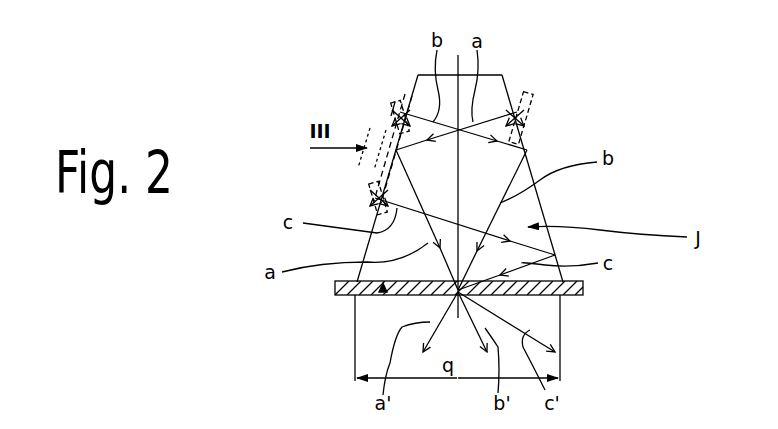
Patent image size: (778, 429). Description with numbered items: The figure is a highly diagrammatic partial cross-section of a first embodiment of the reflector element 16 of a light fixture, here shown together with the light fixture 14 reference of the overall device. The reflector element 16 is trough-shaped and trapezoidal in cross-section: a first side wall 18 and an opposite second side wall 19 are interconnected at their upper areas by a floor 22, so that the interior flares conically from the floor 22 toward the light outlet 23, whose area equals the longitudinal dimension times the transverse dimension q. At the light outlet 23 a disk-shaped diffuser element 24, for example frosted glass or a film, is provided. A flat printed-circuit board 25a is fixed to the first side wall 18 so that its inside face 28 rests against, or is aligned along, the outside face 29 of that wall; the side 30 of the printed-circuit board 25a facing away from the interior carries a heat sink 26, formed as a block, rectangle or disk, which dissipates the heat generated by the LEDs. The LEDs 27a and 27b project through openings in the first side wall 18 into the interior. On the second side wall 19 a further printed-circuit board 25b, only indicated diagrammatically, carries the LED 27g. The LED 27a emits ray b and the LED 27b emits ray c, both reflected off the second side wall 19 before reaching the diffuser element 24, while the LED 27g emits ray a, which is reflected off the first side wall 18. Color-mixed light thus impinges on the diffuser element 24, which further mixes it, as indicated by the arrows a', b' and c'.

The light source device 14 is at (727, 426).
The reflector element 16 is at (662, 167).
The first side wall 18 is at (367, 245).
The second side wall 19 is at (540, 207).
The floor 22 is at (489, 73).
The light outlet 23 is at (382, 294).
The diffuser element 24 is at (350, 294).
The printed-circuit board 25a is at (383, 110).
The printed-circuit board 25b is at (517, 98).
The heat sink 26 is at (377, 113).
The LED 27a is at (410, 98).
The LED 27b is at (373, 198).
The LED 27g is at (525, 128).
The inside face 28 is at (383, 163).
The outside face 29 is at (357, 133).
The side 30 is at (382, 130).